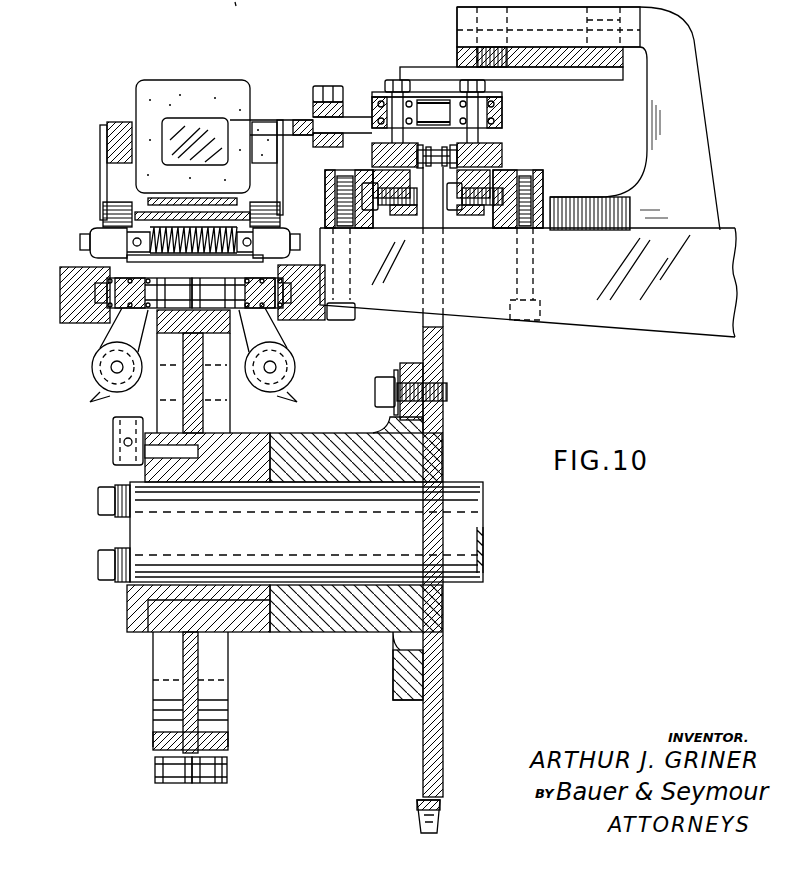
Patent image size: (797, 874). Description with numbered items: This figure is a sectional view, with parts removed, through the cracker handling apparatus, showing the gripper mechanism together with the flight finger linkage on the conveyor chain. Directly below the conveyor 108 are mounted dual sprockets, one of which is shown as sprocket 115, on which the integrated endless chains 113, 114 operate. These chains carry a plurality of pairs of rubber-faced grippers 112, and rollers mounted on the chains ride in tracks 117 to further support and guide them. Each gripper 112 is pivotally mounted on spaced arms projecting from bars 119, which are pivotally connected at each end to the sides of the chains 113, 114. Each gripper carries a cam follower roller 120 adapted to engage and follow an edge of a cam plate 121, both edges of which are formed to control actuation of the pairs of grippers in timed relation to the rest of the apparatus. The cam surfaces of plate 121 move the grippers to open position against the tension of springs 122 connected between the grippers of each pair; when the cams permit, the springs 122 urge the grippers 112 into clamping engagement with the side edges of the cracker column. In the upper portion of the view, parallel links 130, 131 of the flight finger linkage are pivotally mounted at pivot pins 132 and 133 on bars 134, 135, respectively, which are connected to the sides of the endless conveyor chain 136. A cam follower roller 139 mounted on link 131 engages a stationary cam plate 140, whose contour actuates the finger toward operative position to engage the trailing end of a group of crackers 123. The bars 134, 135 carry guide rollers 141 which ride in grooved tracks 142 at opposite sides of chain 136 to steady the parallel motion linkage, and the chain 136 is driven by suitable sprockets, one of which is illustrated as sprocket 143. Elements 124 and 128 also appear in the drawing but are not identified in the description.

The conveyor 108 is at (173, 192).
The rubber-faced grippers 112 is at (105, 145).
The chain 113 is at (187, 286).
The chain 114 is at (226, 286).
The dual sprocket 115 is at (155, 742).
The tracks 117 is at (62, 312).
The bars 119 is at (100, 336).
The cam follower roller 120 is at (100, 213).
The cam plate 121 is at (140, 200).
The springs 122 is at (117, 253).
The group of crackers 123 is at (226, 80).
The window 124 is at (197, 124).
The member 128 is at (226, 4).
The parallel link 130 is at (345, 107).
The parallel link 131 is at (438, 107).
The pivot pin 132 is at (396, 98).
The pivot pin 133 is at (492, 113).
The bar 134 is at (378, 140).
The bar 135 is at (487, 139).
The endless conveyor chain 136 is at (449, 146).
The cam follower roller 139 is at (400, 76).
The stationary cam plate 140 is at (500, 70).
The guide rollers 141 is at (518, 233).
The grooved tracks 142 is at (507, 172).
The sprocket 143 is at (433, 217).